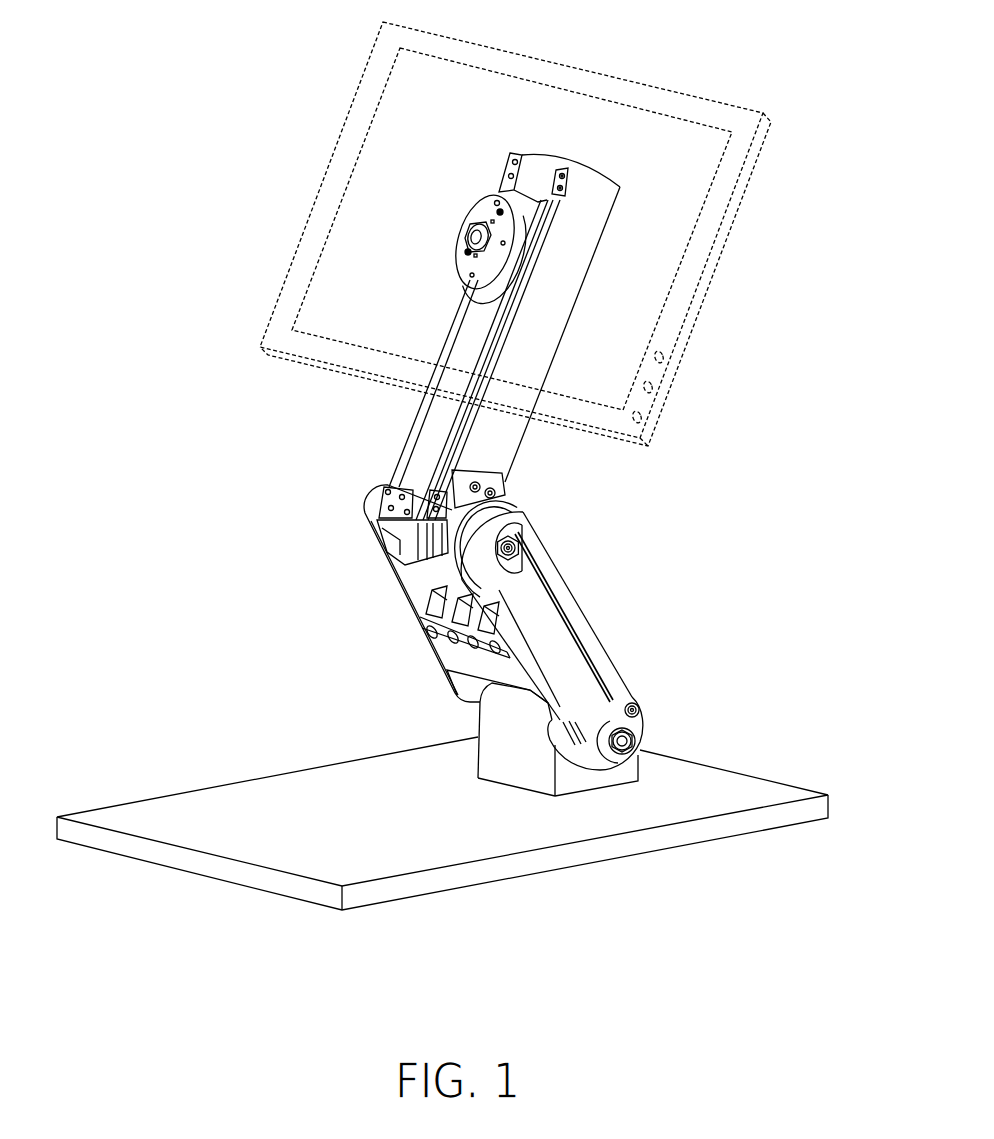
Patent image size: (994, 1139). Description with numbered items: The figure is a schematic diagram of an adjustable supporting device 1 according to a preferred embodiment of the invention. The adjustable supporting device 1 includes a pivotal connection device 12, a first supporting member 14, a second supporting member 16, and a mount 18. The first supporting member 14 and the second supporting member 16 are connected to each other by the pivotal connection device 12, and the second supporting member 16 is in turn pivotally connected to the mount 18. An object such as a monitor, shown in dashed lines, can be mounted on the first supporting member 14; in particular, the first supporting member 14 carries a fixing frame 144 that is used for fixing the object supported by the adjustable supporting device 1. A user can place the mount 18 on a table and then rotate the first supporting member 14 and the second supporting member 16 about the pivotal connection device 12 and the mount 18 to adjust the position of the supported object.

The adjustable supporting device 1 is at (165, 317).
The pivotal connection device 12 is at (393, 555).
The first supporting member 14 is at (514, 443).
The fixing frame 144 is at (463, 267).
The second supporting member 16 is at (583, 637).
The mount 18 is at (277, 797).